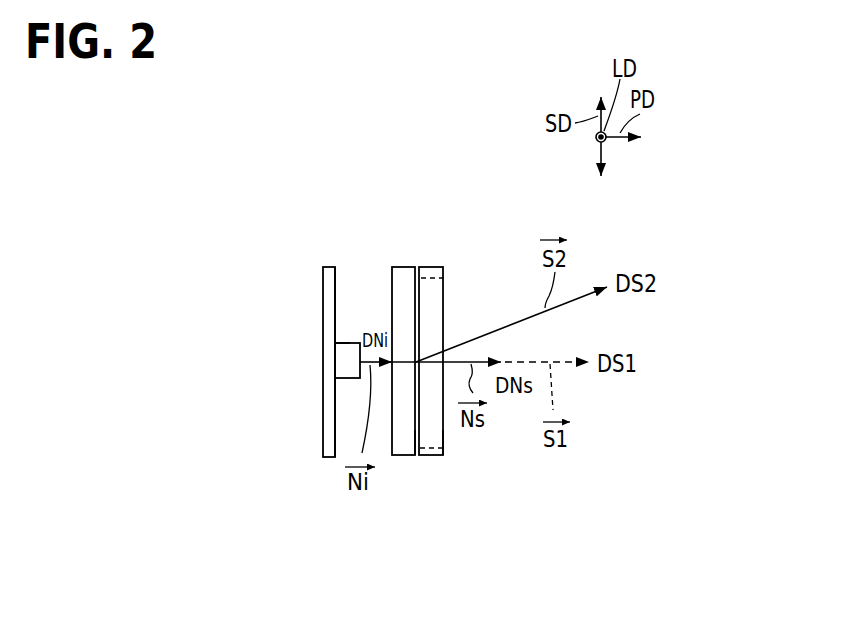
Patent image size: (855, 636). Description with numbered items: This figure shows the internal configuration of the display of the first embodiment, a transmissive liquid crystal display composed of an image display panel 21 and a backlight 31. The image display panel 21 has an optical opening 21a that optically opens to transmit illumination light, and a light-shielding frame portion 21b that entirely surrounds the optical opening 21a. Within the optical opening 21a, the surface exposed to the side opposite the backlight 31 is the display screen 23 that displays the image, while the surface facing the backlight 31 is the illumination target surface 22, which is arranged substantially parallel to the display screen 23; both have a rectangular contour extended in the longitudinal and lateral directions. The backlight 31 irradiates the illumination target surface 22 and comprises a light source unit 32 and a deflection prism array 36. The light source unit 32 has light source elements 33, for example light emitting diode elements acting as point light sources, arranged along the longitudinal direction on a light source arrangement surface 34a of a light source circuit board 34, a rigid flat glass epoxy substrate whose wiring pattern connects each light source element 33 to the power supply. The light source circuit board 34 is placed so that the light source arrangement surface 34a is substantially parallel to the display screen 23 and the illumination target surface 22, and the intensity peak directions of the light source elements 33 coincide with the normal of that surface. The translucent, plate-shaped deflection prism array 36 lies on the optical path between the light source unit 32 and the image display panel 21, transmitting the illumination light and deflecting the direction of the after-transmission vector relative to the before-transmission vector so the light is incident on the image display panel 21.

The backlight 31 is at (311, 170).
The light source unit 32 is at (327, 267).
The light source element 33 is at (352, 343).
The light source circuit board 34 is at (323, 358).
The light source arrangement surface 34a is at (346, 290).
The deflection prism array 36 is at (397, 267).
The image display panel 21 is at (437, 267).
The optical opening 21a is at (443, 278).
The light-shielding frame portion 21b is at (432, 456).
The illumination target surface 22 is at (407, 440).
The display screen 23 is at (451, 441).